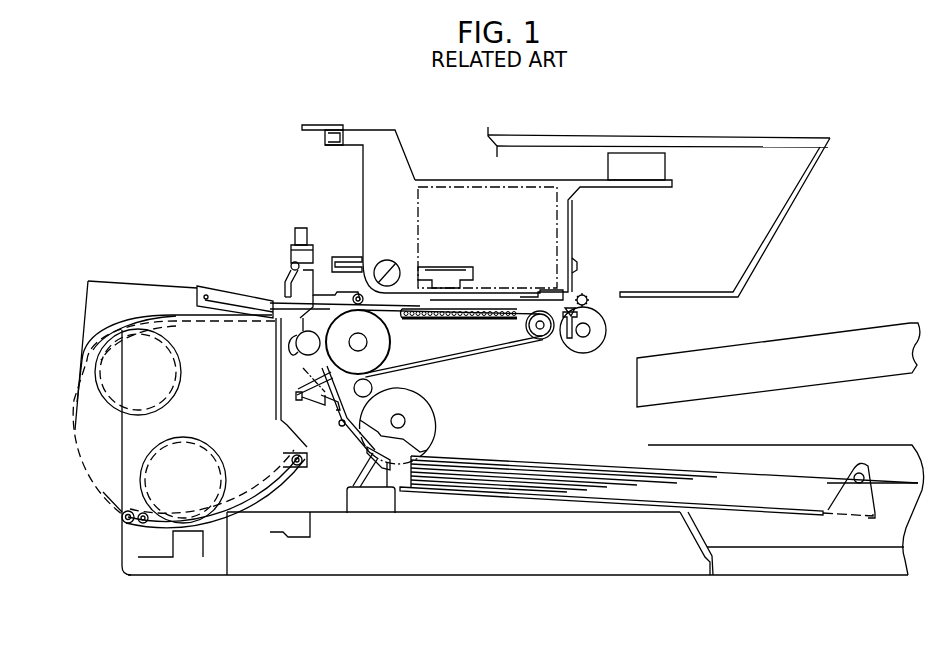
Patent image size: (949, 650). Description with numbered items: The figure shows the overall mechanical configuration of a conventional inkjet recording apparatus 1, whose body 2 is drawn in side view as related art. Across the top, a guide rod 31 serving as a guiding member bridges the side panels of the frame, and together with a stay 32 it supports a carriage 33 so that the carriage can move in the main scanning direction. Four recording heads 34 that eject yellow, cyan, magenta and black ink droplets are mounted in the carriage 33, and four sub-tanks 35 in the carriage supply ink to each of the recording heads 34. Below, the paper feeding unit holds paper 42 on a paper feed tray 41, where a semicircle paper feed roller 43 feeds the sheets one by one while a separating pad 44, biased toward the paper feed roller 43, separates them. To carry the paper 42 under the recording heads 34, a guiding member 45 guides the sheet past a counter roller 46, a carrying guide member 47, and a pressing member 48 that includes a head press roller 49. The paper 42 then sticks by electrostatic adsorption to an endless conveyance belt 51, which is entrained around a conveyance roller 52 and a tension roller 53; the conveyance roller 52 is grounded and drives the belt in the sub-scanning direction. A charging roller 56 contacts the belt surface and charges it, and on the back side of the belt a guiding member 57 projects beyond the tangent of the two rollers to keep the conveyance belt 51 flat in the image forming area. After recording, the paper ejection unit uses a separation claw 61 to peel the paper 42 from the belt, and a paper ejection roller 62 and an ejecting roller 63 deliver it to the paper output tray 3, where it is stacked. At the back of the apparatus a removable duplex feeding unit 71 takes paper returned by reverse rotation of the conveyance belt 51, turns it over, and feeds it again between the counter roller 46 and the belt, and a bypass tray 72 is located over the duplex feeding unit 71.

The inkjet recording apparatus 1 is at (557, 133).
The apparatus body 2 is at (689, 568).
The paper output tray 3 is at (879, 336).
The guide rod 31 is at (386, 262).
The stay 32 is at (333, 132).
The carriage 33 is at (400, 157).
The recording heads 34 is at (500, 292).
The sub-tanks 35 is at (462, 197).
The paper feed tray 41 is at (471, 500).
The paper 42 is at (536, 482).
The paper feed roller 43 is at (437, 430).
The separating pad 44 is at (373, 470).
The guiding member 45 is at (337, 432).
The counter roller 46 is at (296, 344).
The carrying guide member 47 is at (309, 299).
The pressing member 48 is at (293, 265).
The head press roller 49 is at (352, 295).
The conveyance belt 51 is at (477, 360).
The conveyance roller 52 is at (388, 345).
The tension roller 53 is at (541, 340).
The charging roller 56 is at (373, 390).
The guiding member 57 is at (439, 321).
The separation claw 61 is at (576, 348).
The paper ejection roller 62 is at (606, 328).
The ejecting roller 63 is at (590, 295).
The duplex feeding unit 71 is at (124, 279).
The bypass tray 72 is at (180, 282).